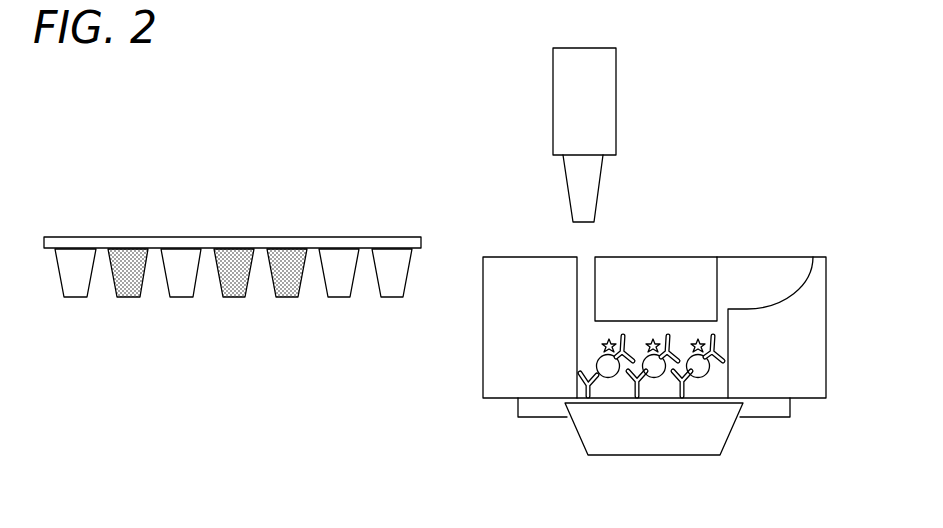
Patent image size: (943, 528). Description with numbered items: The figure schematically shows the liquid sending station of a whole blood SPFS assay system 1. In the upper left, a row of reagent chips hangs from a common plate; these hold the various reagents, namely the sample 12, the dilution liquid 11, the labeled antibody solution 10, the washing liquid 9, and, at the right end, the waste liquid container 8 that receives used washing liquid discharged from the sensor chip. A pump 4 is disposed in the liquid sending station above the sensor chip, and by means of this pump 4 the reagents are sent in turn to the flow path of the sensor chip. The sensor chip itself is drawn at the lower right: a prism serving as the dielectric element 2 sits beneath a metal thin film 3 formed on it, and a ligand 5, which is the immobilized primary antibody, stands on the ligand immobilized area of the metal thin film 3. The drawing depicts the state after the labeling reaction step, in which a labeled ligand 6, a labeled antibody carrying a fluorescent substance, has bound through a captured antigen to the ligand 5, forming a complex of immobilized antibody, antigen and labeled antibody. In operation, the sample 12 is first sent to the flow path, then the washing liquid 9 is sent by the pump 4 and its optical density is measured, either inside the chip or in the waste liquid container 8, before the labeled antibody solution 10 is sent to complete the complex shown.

The whole blood SPFS assay system 1 is at (788, 122).
The dielectric element 2 is at (654, 445).
The metal thin film 3 is at (703, 403).
The pump 4 is at (603, 102).
The ligand 5 is at (575, 384).
The labeled ligand 6 is at (627, 398).
The waste liquid container 8 is at (338, 287).
The washing liquid 9 is at (273, 288).
The labeled antibody solution 10 is at (183, 287).
The dilution liquid 11 is at (127, 299).
The sample 12 is at (77, 287).